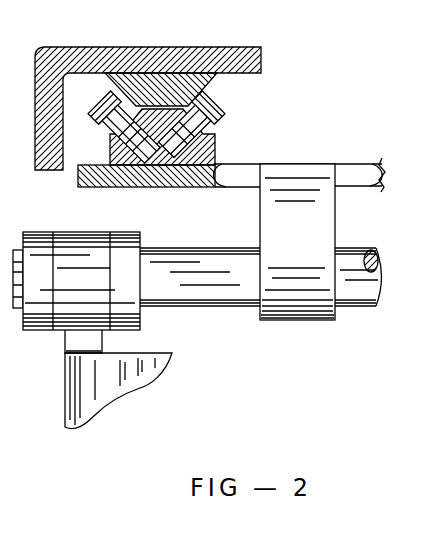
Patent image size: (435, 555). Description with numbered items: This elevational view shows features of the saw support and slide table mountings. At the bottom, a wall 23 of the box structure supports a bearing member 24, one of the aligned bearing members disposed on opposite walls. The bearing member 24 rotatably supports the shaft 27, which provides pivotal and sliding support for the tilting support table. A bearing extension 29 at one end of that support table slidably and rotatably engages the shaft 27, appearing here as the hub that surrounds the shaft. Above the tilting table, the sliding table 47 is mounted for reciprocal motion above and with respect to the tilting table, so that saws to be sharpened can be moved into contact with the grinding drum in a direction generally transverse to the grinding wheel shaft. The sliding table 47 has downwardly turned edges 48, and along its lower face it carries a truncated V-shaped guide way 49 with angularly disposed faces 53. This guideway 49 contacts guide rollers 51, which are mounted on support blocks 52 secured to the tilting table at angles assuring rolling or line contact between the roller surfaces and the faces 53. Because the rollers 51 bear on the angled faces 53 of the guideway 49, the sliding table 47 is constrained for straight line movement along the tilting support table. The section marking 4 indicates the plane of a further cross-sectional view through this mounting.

The sliding table 47 is at (261, 46).
The truncated V-shaped guide way 49 is at (190, 58).
The downwardly turned edge 48 is at (45, 115).
The angularly disposed faces 53 is at (212, 80).
The support block 52 is at (113, 144).
The guide roller 51 is at (100, 121).
The bearing extension 29 is at (324, 226).
The shaft 27 is at (201, 294).
The bearing member 24 is at (66, 333).
The wall 23 is at (65, 416).
The section line 4- 4 is at (272, 135).